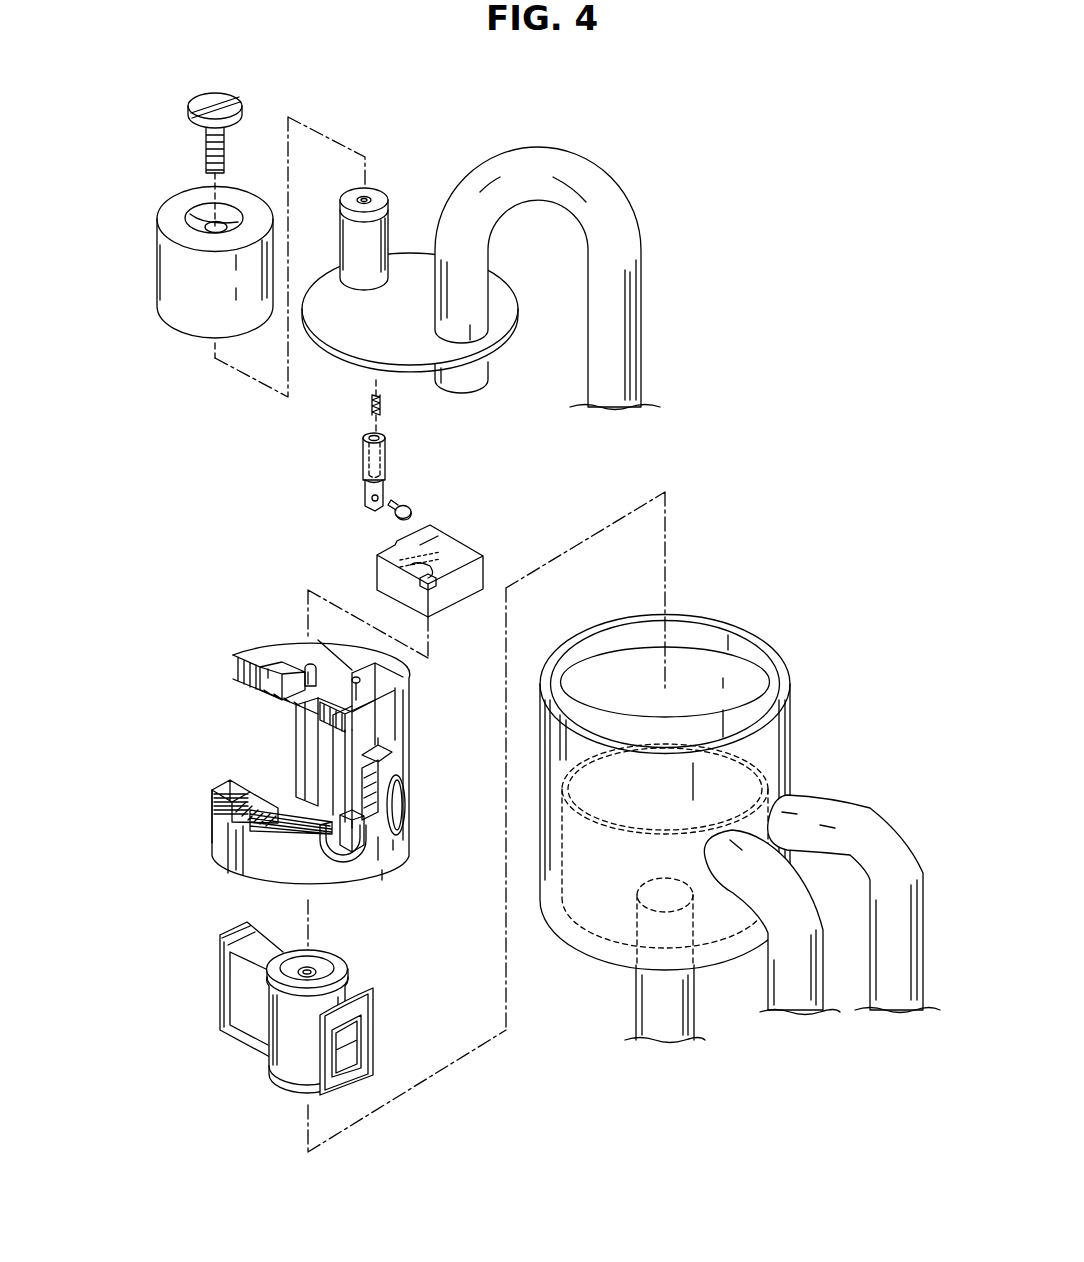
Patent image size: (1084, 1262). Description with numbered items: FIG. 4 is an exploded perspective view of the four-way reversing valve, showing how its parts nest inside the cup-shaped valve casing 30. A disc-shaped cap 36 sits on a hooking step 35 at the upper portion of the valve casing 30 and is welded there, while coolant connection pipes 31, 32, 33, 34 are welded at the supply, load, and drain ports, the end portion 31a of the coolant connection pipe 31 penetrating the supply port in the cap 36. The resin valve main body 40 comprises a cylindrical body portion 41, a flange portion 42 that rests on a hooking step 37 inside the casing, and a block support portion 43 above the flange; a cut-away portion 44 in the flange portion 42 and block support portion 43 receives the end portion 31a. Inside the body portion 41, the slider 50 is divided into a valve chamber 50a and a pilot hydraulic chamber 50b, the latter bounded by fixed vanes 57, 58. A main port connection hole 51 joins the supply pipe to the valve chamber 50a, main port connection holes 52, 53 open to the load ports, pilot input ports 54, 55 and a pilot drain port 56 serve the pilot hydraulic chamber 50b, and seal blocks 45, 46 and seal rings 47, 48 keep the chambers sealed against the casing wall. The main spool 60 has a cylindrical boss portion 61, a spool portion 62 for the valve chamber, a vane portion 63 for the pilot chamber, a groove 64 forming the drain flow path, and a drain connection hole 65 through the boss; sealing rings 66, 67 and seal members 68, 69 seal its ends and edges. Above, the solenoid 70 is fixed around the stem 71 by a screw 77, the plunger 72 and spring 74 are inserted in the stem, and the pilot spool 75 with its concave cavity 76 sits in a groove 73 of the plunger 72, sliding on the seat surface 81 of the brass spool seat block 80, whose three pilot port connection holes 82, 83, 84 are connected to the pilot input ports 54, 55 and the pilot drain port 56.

The valve casing 30 is at (740, 821).
The coolant connection pipe 31 is at (632, 230).
The end portion 31a is at (489, 384).
The coolant connection pipe 32 is at (898, 842).
The coolant connection pipe 33 is at (792, 1022).
The coolant connection pipe 34 is at (640, 1012).
The hooking step 35 is at (756, 680).
The cap 36 is at (332, 360).
The hooking step 37 is at (677, 717).
The valve main body 40 is at (323, 739).
The body portion 41 is at (393, 866).
The flange portion 42 is at (250, 652).
The block support portion 43 is at (306, 660).
The cut-away portion 44 is at (406, 718).
The seal block 45 is at (380, 790).
The seal block 46 is at (232, 864).
The seal ring 47 is at (407, 843).
The seal ring 48 is at (340, 865).
The slider 50 is at (354, 763).
The valve chamber 50a is at (306, 825).
The pilot hydraulic chamber 50b is at (252, 768).
The main port connection hole 51 is at (368, 762).
The main port connection hole 52 is at (406, 808).
The main port connection hole 53 is at (358, 856).
The pilot input port 54 is at (236, 790).
The pilot input port 55 is at (306, 672).
The pilot drain port 56 is at (400, 690).
The fixed vane 57 is at (222, 795).
The fixed vane 58 is at (296, 723).
The main spool 60 is at (317, 1036).
The boss portion 61 is at (280, 1055).
The spool portion 62 is at (340, 1085).
The vane portion 63 is at (240, 1005).
The groove 64 is at (354, 1040).
The drain connection hole 65 is at (314, 975).
The sealing ring 66 is at (348, 978).
The sealing ring 67 is at (292, 1095).
The seal member 68 is at (375, 1041).
The seal member 69 is at (218, 964).
The solenoid 70 is at (188, 355).
The stem 71 is at (392, 224).
The plunger 72 is at (362, 455).
The groove 73 is at (364, 499).
The spring 74 is at (386, 408).
The pilot spool 75 is at (401, 504).
The concave cavity 76 is at (412, 515).
The screw 77 is at (238, 108).
The spool seat block 80 is at (498, 551).
The seat surface 81 is at (398, 548).
The pilot port connection hole 82 is at (384, 570).
The pilot port connection hole 83 is at (446, 556).
The pilot port connection hole 84 is at (466, 567).